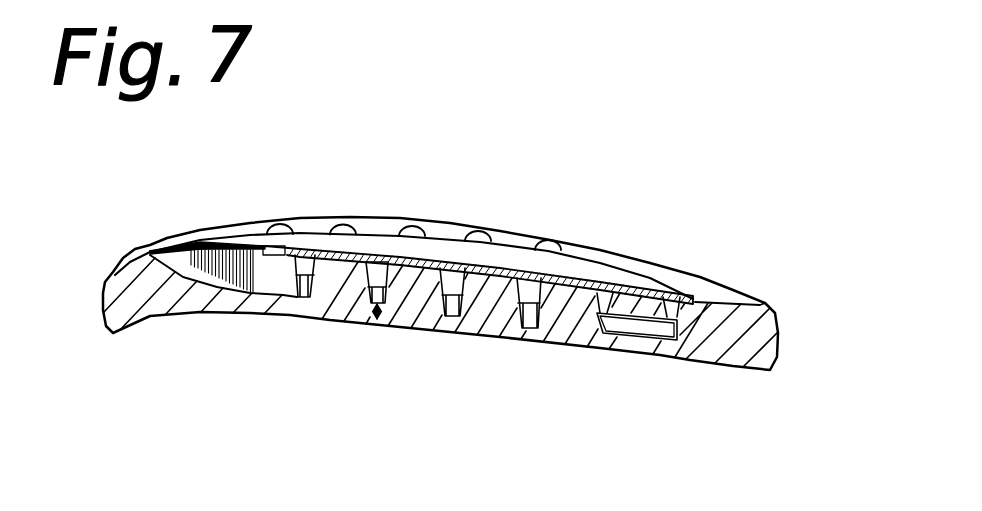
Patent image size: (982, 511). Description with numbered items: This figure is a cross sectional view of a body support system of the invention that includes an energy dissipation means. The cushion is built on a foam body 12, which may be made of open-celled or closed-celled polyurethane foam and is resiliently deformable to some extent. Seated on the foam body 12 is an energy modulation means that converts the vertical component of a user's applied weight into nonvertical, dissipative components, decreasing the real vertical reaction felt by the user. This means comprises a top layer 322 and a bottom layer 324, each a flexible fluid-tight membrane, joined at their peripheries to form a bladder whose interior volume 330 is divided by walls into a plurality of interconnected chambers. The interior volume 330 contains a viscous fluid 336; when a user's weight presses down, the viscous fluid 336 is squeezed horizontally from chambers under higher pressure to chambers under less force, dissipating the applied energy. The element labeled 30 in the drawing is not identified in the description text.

The foam body 12 is at (723, 310).
The cover 30 is at (591, 284).
The top layer 322 is at (378, 286).
The bottom layer 324 is at (377, 318).
The interior volume 330 is at (633, 323).
The viscous fluid 336 is at (299, 305).